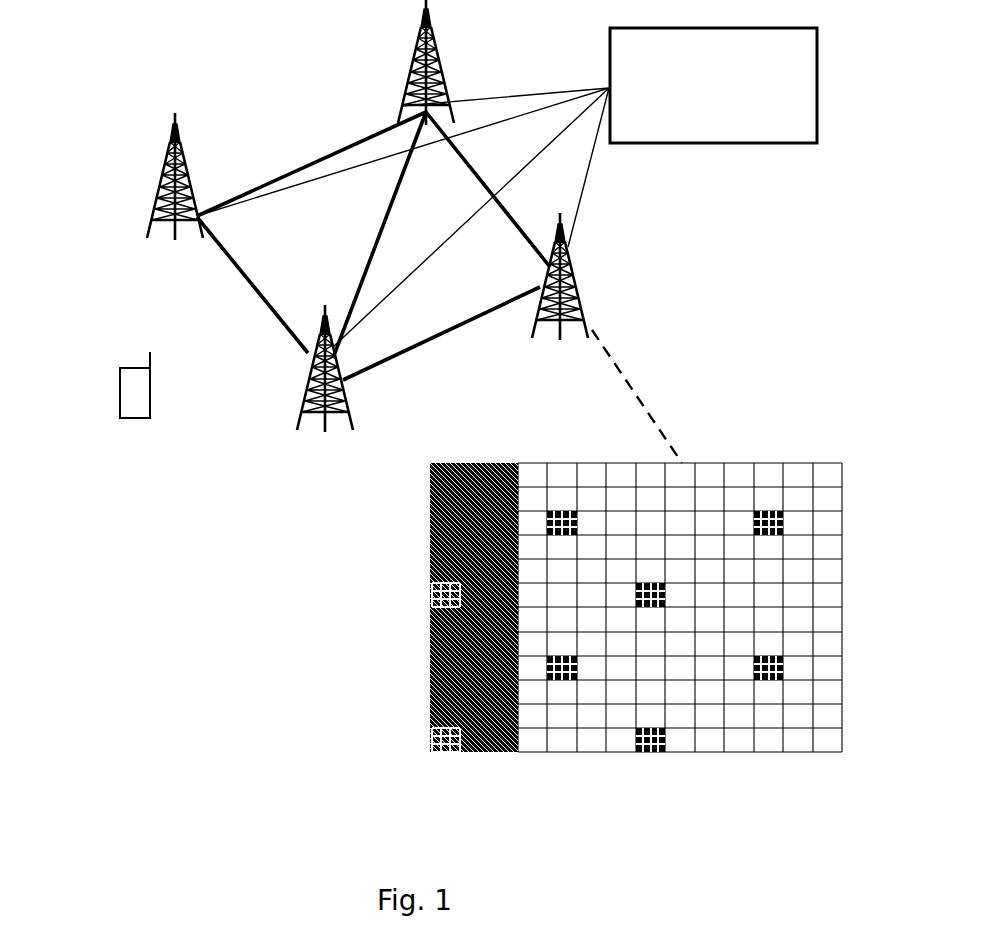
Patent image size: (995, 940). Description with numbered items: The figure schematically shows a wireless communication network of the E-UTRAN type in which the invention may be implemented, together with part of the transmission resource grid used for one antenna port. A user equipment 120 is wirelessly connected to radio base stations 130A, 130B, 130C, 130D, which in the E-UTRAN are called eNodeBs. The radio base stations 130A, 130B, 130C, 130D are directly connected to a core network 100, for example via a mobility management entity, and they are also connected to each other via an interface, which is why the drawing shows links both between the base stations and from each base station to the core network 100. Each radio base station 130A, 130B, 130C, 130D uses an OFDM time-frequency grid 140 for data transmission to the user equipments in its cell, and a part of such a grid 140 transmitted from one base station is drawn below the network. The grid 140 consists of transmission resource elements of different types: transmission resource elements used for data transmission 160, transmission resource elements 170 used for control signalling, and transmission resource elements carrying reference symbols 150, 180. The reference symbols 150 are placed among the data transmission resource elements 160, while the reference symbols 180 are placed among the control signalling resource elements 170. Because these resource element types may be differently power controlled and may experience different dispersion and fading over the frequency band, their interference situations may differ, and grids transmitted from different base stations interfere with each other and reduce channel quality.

The core network 100 is at (508, 187).
The user equipment 120 is at (137, 418).
The radio base station 130A is at (398, 107).
The radio base station 130B is at (152, 204).
The radio base station 130C is at (293, 416).
The radio base station 130D is at (533, 315).
The OFDM time-frequency grid 140 is at (730, 452).
The transmission resource elements for reference symbols 150 is at (637, 752).
The transmission resource elements used for data transmission 160 is at (680, 750).
The transmission resource elements used for control signalling 170 is at (518, 463).
The transmission resource elements for reference symbols 180 is at (430, 753).